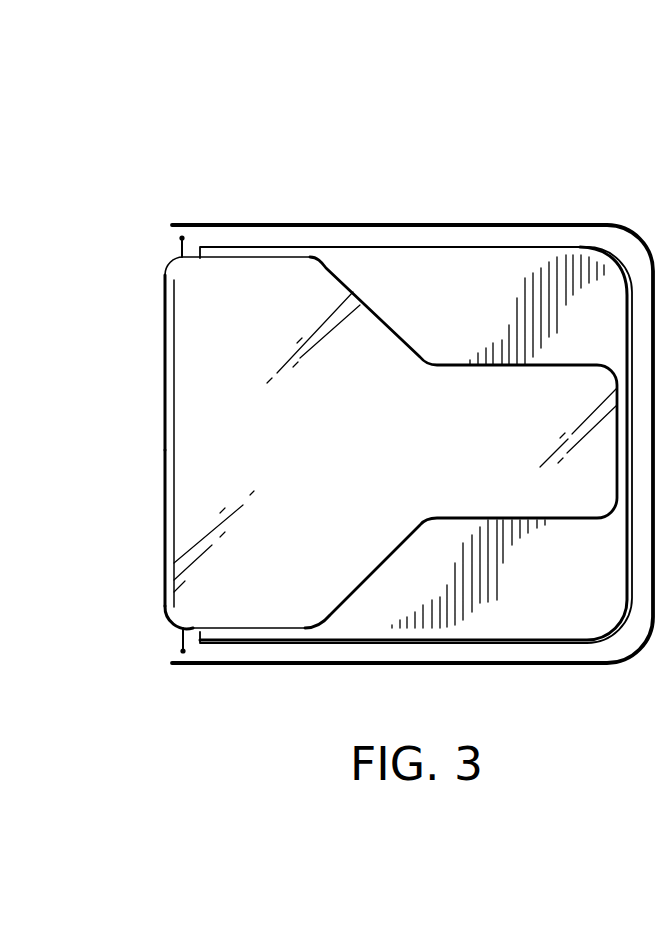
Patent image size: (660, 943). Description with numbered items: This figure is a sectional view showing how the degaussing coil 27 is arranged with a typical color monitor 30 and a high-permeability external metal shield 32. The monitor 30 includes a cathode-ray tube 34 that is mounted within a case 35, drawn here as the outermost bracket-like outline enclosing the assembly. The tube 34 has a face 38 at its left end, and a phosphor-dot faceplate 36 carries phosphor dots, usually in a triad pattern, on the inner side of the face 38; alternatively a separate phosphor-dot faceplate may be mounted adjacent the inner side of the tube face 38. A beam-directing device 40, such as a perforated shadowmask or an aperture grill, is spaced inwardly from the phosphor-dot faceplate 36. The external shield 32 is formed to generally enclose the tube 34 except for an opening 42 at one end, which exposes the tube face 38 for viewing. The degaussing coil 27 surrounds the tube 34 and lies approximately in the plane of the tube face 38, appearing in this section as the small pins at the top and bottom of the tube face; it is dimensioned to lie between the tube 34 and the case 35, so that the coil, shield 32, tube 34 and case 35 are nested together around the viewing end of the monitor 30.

The color monitor 30 is at (140, 187).
The external metal shield 32 is at (273, 247).
The case 35 is at (410, 224).
The degaussing coil 27 is at (180, 248).
The opening 42 is at (182, 640).
The phosphor-dot faceplate 36 is at (165, 455).
The beam-directing device 40 is at (173, 361).
The tube face 38 is at (165, 515).
The cathode-ray tube 34 is at (155, 619).